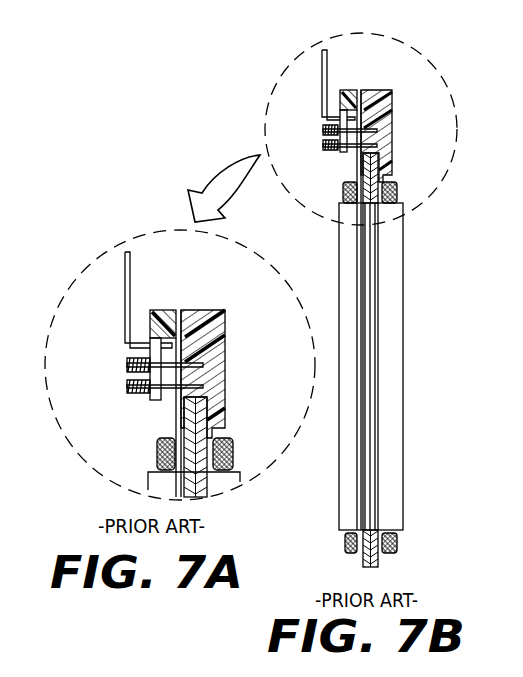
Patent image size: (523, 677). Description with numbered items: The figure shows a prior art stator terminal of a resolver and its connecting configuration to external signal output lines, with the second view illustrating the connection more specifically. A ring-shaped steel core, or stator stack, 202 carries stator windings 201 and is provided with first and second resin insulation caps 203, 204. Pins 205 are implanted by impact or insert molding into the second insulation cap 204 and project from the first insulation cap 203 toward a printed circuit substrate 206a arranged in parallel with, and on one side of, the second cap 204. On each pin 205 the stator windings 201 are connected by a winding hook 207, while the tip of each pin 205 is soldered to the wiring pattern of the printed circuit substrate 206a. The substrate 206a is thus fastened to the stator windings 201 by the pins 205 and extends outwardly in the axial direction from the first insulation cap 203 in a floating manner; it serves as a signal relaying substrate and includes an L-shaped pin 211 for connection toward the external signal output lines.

In FIG. 7A, the stator windings 201 is at (157, 443).
In FIG. 7A, the ring-shaped steel core 202 is at (206, 404).
In FIG. 7A, the first insulation cap 203 is at (158, 314).
In FIG. 7A, the second insulation cap 204 is at (225, 328).
In FIG. 7A, the pins 205 is at (203, 387).
In FIG. 7A, the printed circuit substrate 206a is at (158, 398).
In FIG. 7B, the printed circuit substrate 206a is at (340, 152).
In FIG. 7A, the winding hook 207 is at (133, 362).
In FIG. 7A, the L-shaped pin 211 is at (130, 260).
In FIG. 7B, the L-shaped pin 211 is at (327, 62).